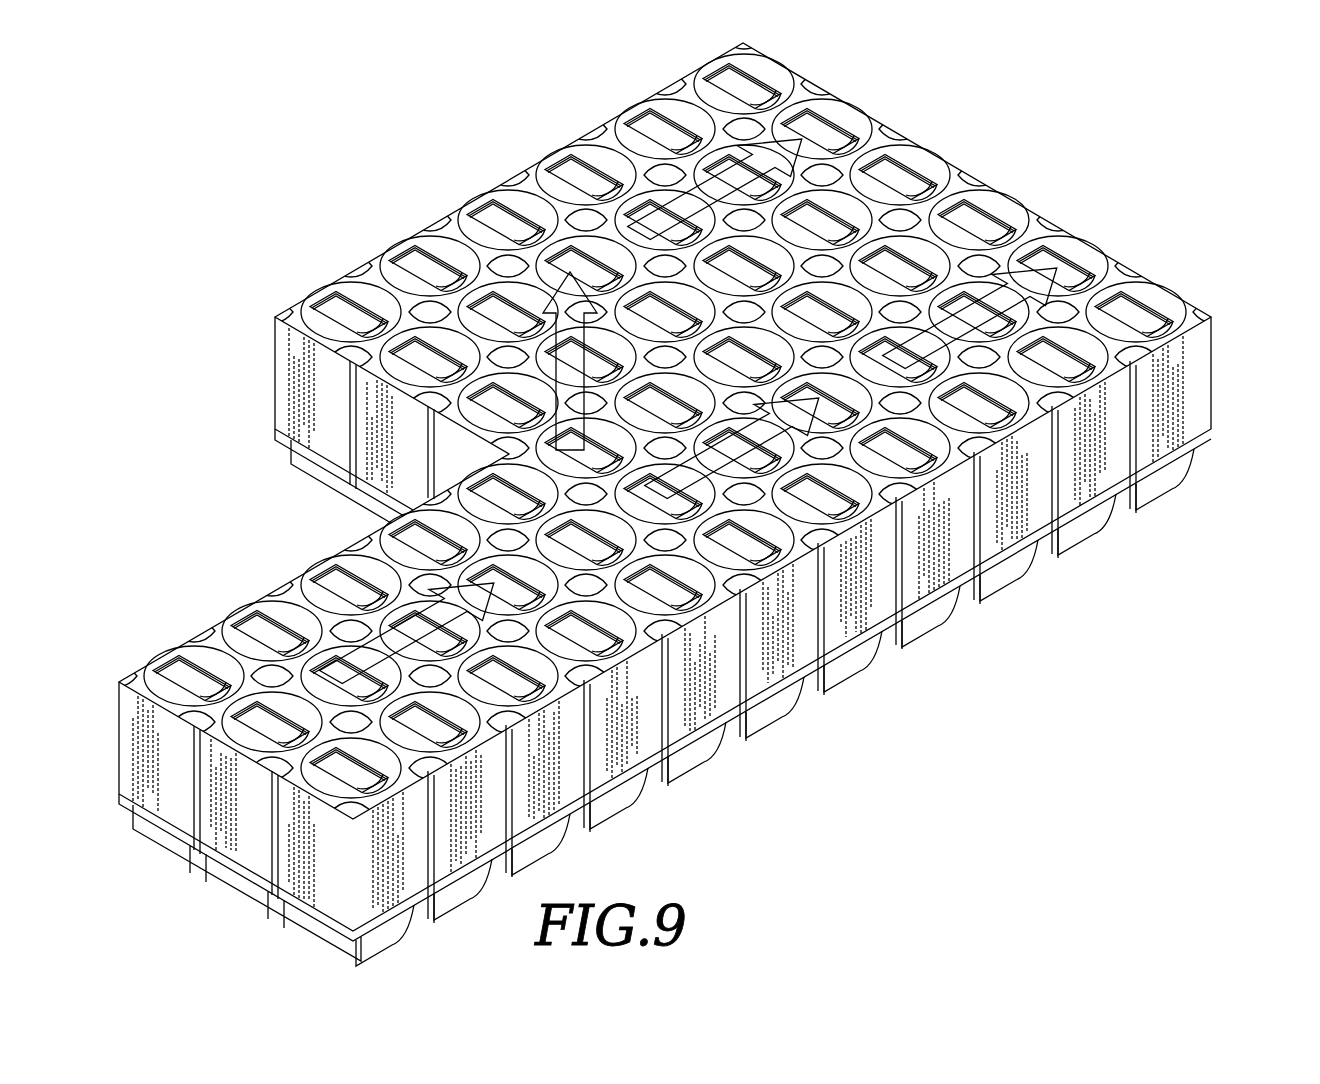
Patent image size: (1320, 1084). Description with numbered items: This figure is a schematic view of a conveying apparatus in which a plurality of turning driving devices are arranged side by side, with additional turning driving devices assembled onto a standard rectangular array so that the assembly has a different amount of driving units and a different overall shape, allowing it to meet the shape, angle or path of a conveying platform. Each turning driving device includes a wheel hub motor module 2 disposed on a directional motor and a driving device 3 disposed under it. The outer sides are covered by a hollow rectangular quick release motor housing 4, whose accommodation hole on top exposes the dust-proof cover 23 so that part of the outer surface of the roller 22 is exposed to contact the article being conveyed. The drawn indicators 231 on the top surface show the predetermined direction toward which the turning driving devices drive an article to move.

The wheel hub motor module 2 is at (692, 496).
The roller 22 is at (905, 178).
The dust-proof cover 23 is at (956, 88).
The guide indicator 231 is at (798, 146).
The driving device 3 is at (268, 469).
The quick release motor housing 4 is at (246, 356).